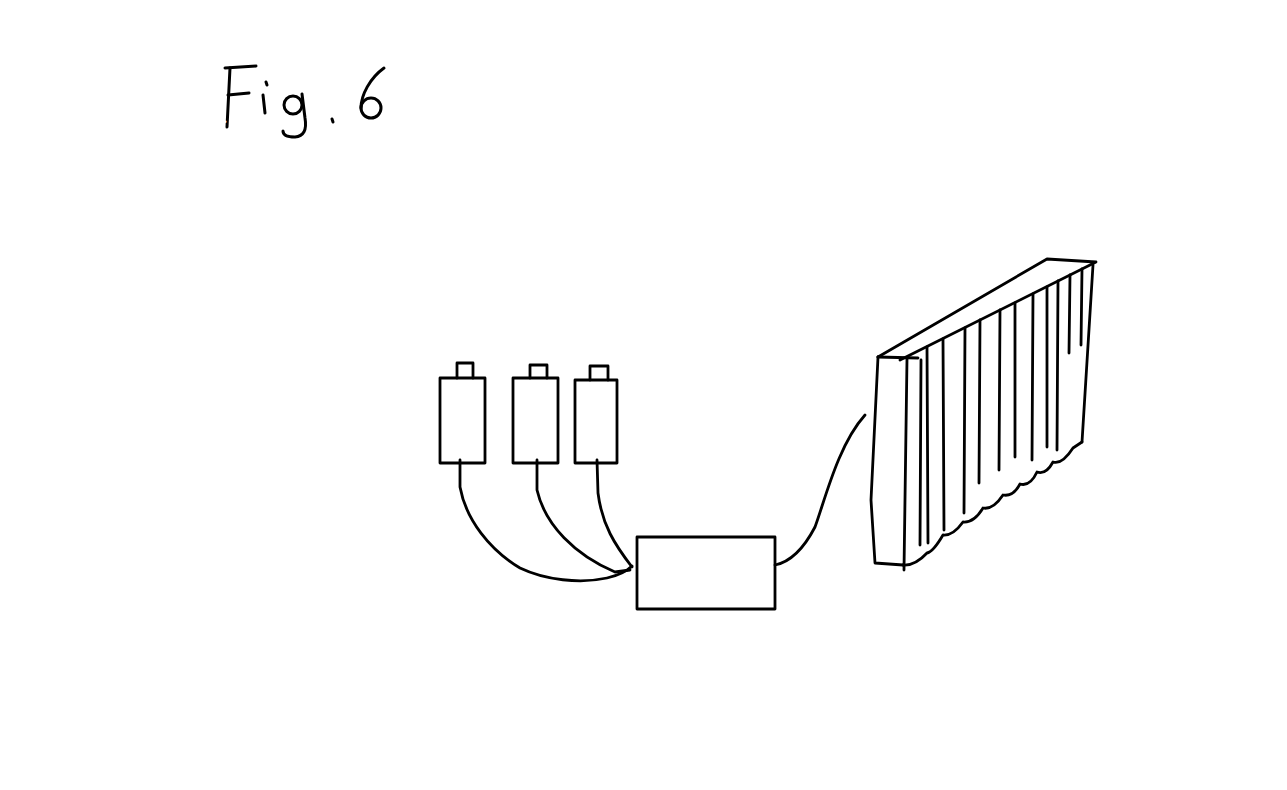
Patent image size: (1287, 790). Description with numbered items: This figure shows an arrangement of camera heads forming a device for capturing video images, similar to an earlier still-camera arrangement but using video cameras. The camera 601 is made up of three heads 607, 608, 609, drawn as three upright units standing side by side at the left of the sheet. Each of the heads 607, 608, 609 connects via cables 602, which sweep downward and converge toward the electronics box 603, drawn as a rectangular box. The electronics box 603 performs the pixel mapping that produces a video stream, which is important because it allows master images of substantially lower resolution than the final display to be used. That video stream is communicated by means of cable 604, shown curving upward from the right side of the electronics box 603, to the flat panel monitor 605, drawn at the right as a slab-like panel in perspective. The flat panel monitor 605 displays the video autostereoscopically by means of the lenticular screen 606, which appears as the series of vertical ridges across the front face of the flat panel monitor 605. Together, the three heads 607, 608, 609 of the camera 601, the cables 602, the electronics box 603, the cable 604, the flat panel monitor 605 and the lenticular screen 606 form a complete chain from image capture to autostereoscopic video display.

The camera 601 is at (471, 371).
The cables 602 is at (530, 593).
The electronics box 603 is at (707, 622).
The cable 604 is at (823, 548).
The flat panel monitor 605 is at (1044, 333).
The lenticular screen 606 is at (1065, 392).
The head 607 is at (488, 357).
The head 608 is at (558, 348).
The head 609 is at (627, 353).